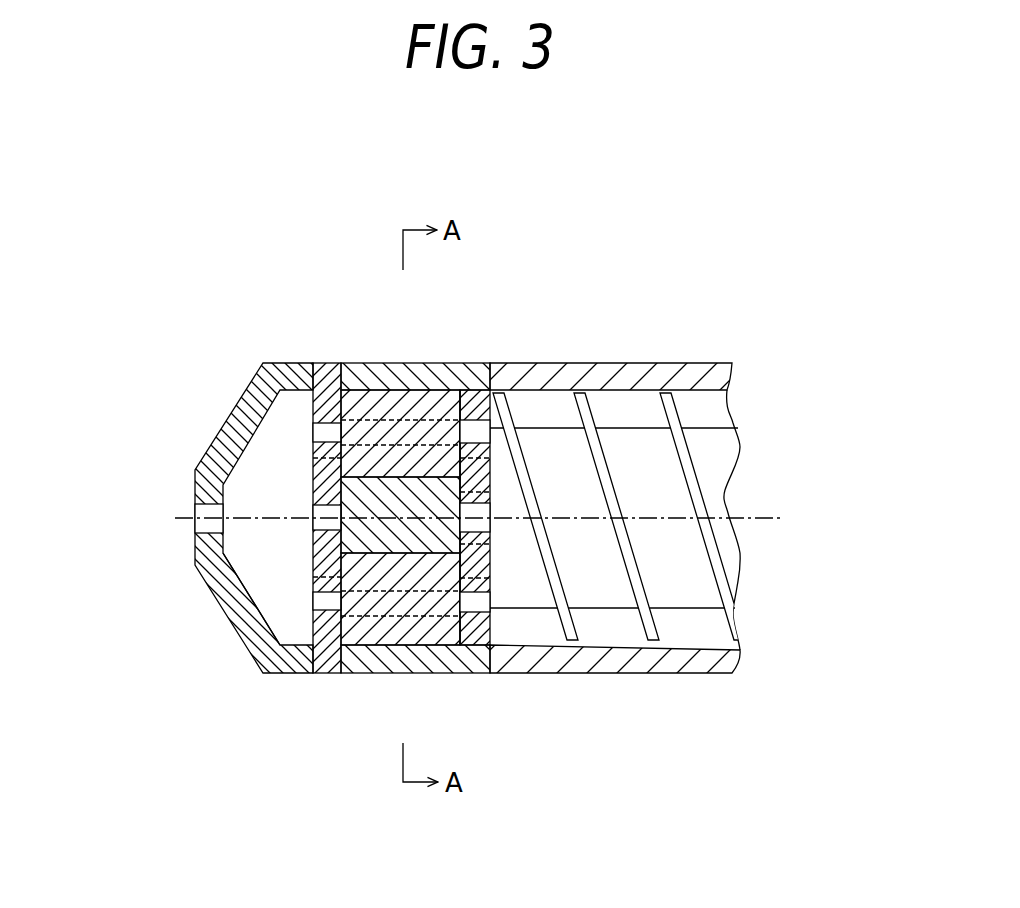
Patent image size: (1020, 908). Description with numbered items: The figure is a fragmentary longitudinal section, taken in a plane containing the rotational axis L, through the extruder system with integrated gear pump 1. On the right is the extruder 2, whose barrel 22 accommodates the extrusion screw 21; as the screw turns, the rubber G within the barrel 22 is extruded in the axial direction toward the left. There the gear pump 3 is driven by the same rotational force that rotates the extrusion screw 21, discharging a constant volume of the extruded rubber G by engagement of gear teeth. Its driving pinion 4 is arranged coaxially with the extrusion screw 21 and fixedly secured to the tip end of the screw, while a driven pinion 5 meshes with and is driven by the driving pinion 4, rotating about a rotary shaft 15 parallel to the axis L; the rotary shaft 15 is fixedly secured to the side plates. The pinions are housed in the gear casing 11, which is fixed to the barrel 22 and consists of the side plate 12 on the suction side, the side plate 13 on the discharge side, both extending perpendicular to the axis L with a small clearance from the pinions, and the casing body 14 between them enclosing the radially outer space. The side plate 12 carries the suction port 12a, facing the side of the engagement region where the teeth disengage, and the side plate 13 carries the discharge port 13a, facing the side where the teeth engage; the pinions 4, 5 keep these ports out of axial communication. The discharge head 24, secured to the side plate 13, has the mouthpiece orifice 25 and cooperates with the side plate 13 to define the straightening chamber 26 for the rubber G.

The extruder system with integrated gear pump 1 is at (462, 491).
The extruder 2 is at (645, 425).
The gear pump 3 is at (356, 491).
The driving pinion 4 is at (379, 475).
The driven pinion 5 is at (445, 385).
The gear casing 11 is at (465, 455).
The side plate 12 is at (525, 503).
The suction port 12a is at (490, 502).
The side plate 13 is at (231, 505).
The discharge port 13a is at (313, 555).
The casing body 14 is at (412, 375).
The rotary shaft 15 is at (318, 433).
The extrusion screw 21 is at (668, 487).
The barrel 22 is at (602, 378).
The discharge head 24 is at (219, 527).
The mouthpiece orifice 25 is at (194, 530).
The straightening chamber 26 is at (267, 597).
The rubber G is at (640, 407).
The rotational axis L is at (743, 515).